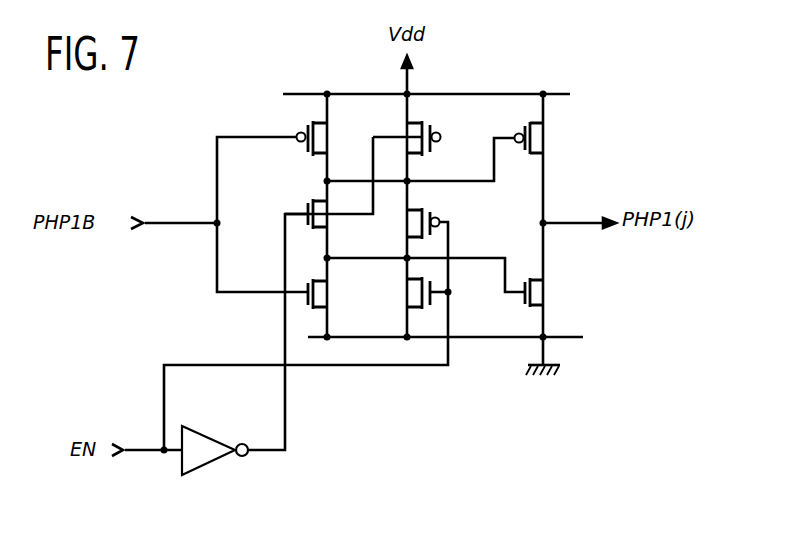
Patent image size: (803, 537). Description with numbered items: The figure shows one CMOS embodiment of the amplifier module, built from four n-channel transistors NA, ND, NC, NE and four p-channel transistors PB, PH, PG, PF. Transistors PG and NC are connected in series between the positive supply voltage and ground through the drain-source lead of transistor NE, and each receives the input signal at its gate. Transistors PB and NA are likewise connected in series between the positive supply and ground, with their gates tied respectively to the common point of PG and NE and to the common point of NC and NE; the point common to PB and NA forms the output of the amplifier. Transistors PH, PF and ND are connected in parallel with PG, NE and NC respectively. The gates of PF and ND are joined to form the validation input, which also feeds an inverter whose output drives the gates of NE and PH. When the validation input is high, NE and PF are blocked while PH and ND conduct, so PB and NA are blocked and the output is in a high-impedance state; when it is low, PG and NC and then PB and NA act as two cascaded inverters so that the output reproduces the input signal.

The p-channel transistor PG is at (290, 120).
The p-channel transistor PH is at (402, 133).
The p-channel transistor PB is at (524, 164).
The n-channel transistor NE is at (298, 202).
The p-channel transistor PF is at (404, 218).
The n-channel transistor ND is at (403, 296).
The n-channel transistor NC is at (322, 289).
The n-channel transistor NA is at (509, 292).